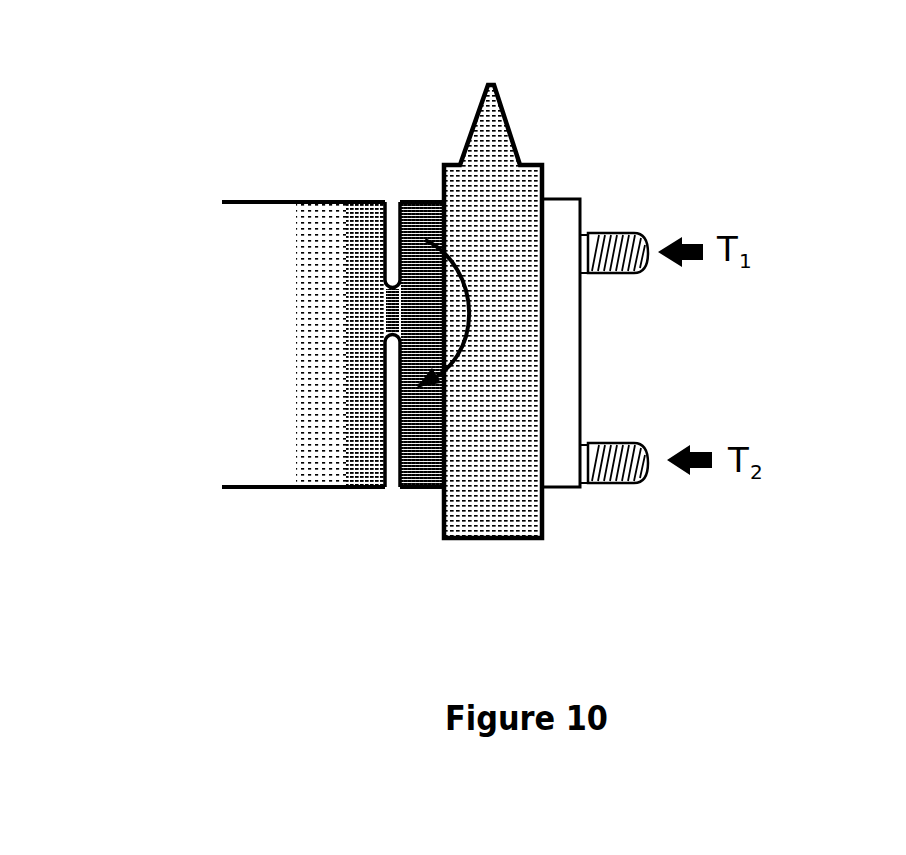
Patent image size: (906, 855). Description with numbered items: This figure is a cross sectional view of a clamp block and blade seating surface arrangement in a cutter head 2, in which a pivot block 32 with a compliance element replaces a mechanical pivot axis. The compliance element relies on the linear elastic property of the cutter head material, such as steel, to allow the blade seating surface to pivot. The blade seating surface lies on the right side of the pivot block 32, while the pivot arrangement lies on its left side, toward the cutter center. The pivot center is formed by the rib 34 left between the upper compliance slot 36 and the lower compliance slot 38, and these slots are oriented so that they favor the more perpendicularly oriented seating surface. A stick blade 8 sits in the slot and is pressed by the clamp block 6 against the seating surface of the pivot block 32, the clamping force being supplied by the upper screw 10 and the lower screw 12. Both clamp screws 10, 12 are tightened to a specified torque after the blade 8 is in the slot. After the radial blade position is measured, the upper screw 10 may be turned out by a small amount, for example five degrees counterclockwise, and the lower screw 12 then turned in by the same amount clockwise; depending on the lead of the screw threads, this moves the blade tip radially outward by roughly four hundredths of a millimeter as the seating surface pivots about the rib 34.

The cutter head 2 is at (318, 473).
The clamp block 6 is at (556, 230).
The stick blade 8 is at (507, 118).
The upper screw 10 is at (608, 276).
The lower screw 12 is at (612, 443).
The pivot block 32 is at (422, 217).
The rib 34 is at (385, 314).
The upper compliance slot 36 is at (393, 210).
The lower compliance slot 38 is at (393, 467).